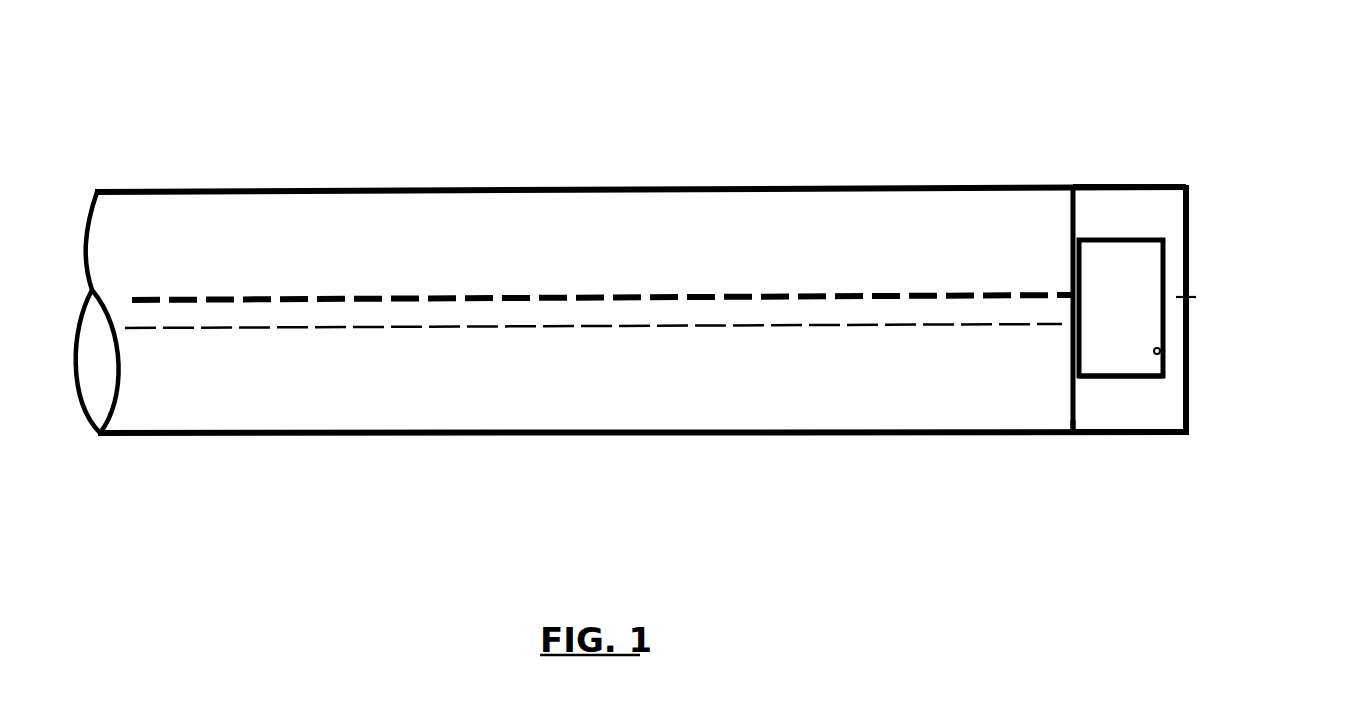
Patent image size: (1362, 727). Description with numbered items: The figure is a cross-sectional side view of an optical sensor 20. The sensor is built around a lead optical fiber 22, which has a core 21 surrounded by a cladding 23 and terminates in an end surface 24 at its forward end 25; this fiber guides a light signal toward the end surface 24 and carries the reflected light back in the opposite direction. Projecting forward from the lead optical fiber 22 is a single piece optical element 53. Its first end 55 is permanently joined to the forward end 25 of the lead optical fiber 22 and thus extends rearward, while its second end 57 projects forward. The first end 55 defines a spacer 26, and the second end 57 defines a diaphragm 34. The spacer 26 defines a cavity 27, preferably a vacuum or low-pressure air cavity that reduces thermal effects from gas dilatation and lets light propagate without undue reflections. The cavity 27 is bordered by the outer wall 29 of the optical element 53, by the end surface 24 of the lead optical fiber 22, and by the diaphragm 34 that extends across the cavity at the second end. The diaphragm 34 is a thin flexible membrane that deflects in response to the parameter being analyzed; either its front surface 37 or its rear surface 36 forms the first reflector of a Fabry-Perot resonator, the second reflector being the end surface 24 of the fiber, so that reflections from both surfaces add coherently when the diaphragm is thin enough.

The optical sensor 20 is at (428, 114).
The core 21 is at (493, 313).
The lead optical fiber 22 is at (222, 436).
The cladding 23 is at (350, 388).
The end surface 24 is at (1083, 211).
The forward end 25 is at (1053, 185).
The spacer 26 is at (1152, 185).
The cavity 27 is at (1137, 292).
The outer wall 29 is at (1133, 405).
The diaphragm 34 is at (1176, 297).
The rear surface 36 is at (1165, 367).
The front surface 37 is at (1190, 317).
The single piece optical element 53 is at (1110, 436).
The first end 55 is at (1083, 435).
The second end 57 is at (1193, 435).